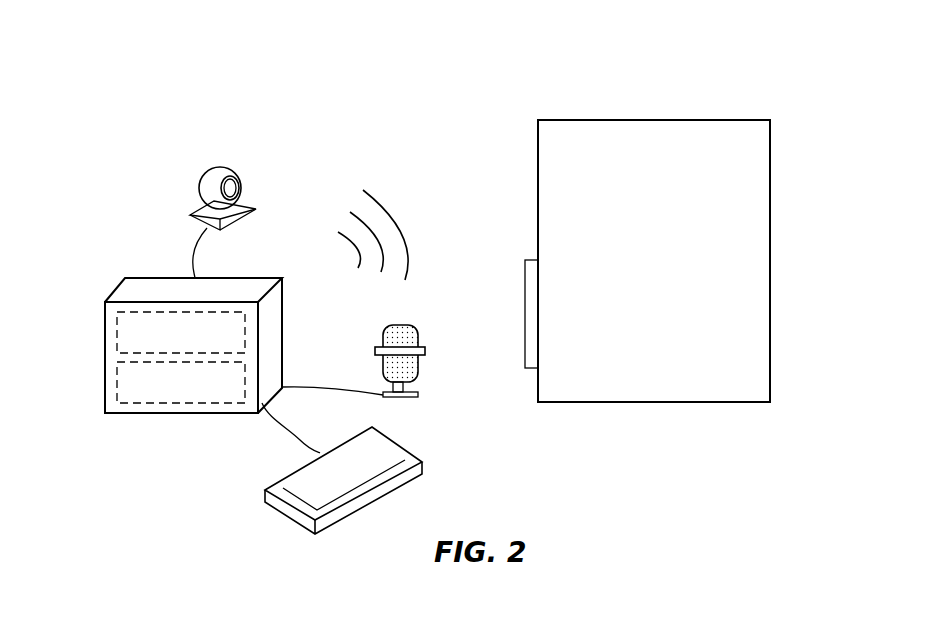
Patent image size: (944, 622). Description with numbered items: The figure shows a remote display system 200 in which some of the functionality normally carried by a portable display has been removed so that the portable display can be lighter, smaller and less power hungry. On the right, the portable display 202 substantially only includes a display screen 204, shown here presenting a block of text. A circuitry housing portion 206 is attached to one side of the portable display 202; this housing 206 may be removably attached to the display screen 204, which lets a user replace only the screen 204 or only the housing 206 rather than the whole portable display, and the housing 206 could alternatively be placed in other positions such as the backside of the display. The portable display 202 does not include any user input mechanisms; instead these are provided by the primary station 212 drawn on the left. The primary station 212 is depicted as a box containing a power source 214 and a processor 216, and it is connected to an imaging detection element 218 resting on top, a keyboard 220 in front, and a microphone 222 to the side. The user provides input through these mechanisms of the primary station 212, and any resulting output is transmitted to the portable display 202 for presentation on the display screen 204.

The remote display system 200 is at (798, 93).
The portable display 202 is at (538, 145).
The display screen 204 is at (762, 214).
The circuitry housing portion 206 is at (525, 268).
The primary station 212 is at (138, 278).
The power source 214 is at (128, 382).
The processor 216 is at (128, 330).
The imaging detection element 218 is at (224, 167).
The keyboard 220 is at (263, 498).
The microphone 222 is at (418, 373).